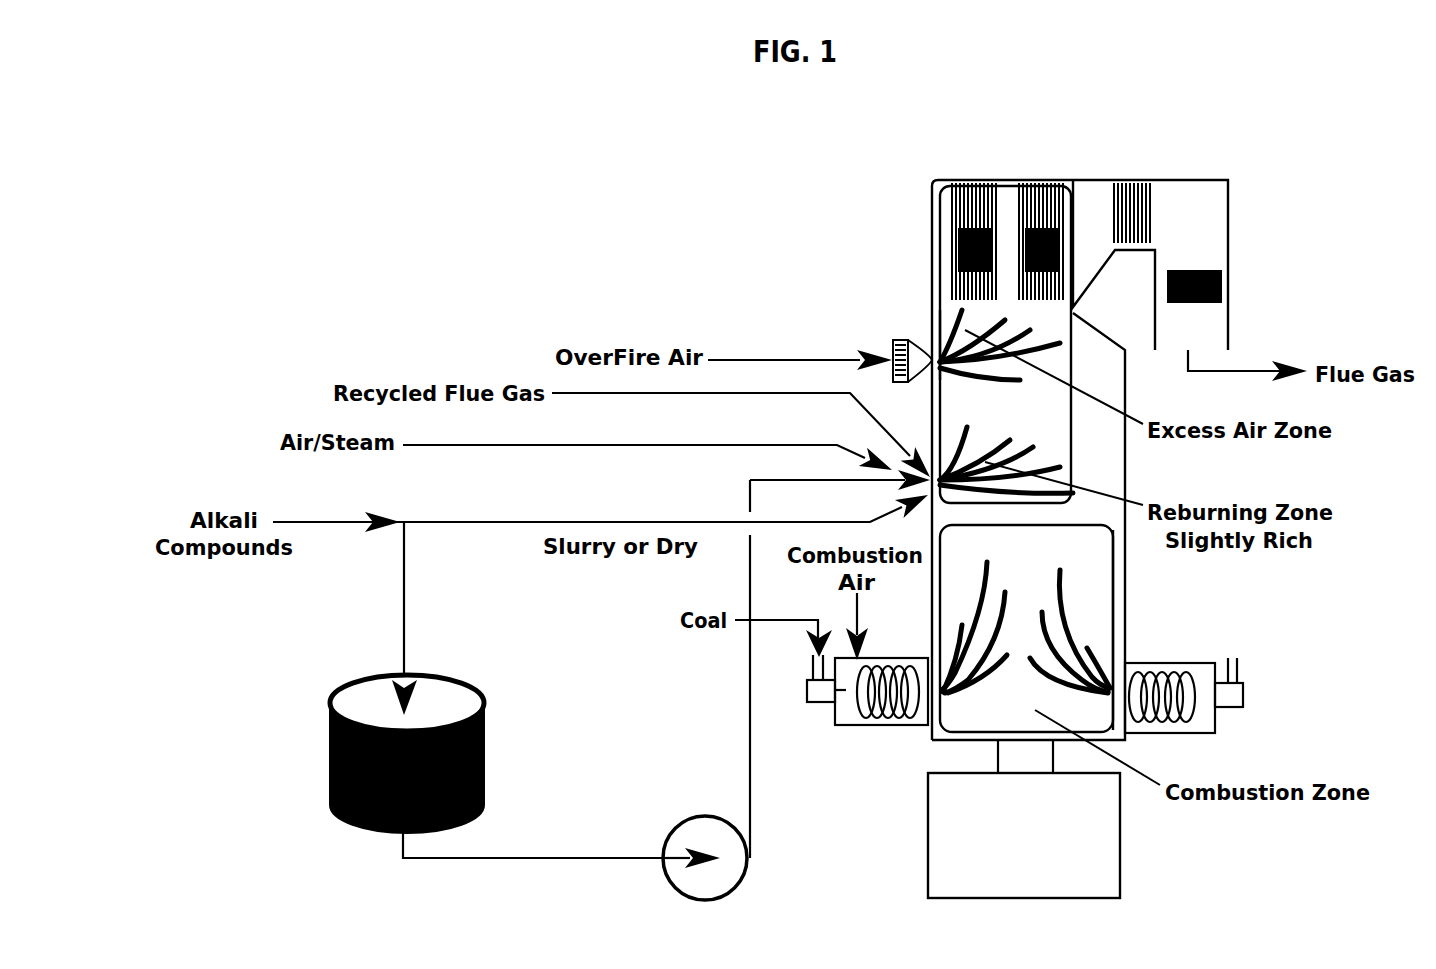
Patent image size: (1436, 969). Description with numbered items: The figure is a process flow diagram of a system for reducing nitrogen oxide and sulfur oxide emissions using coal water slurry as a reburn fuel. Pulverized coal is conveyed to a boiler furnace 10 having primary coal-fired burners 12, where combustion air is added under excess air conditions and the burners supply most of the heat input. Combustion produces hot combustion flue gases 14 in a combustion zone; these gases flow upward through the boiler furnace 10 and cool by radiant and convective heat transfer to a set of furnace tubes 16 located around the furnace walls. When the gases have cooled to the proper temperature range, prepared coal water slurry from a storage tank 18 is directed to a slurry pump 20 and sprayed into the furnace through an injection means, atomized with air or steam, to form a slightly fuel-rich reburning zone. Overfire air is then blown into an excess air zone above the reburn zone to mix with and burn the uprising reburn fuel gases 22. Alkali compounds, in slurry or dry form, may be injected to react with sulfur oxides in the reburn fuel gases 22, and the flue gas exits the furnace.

The boiler furnace 10 is at (1150, 468).
The primary coal-fired burners 12 is at (1177, 673).
The combustion flue gases 14 is at (982, 688).
The furnace tubes 16 is at (1117, 582).
The storage tank 18 is at (485, 718).
The slurry pump 20 is at (745, 882).
The reburn fuel gases 22 is at (1007, 440).